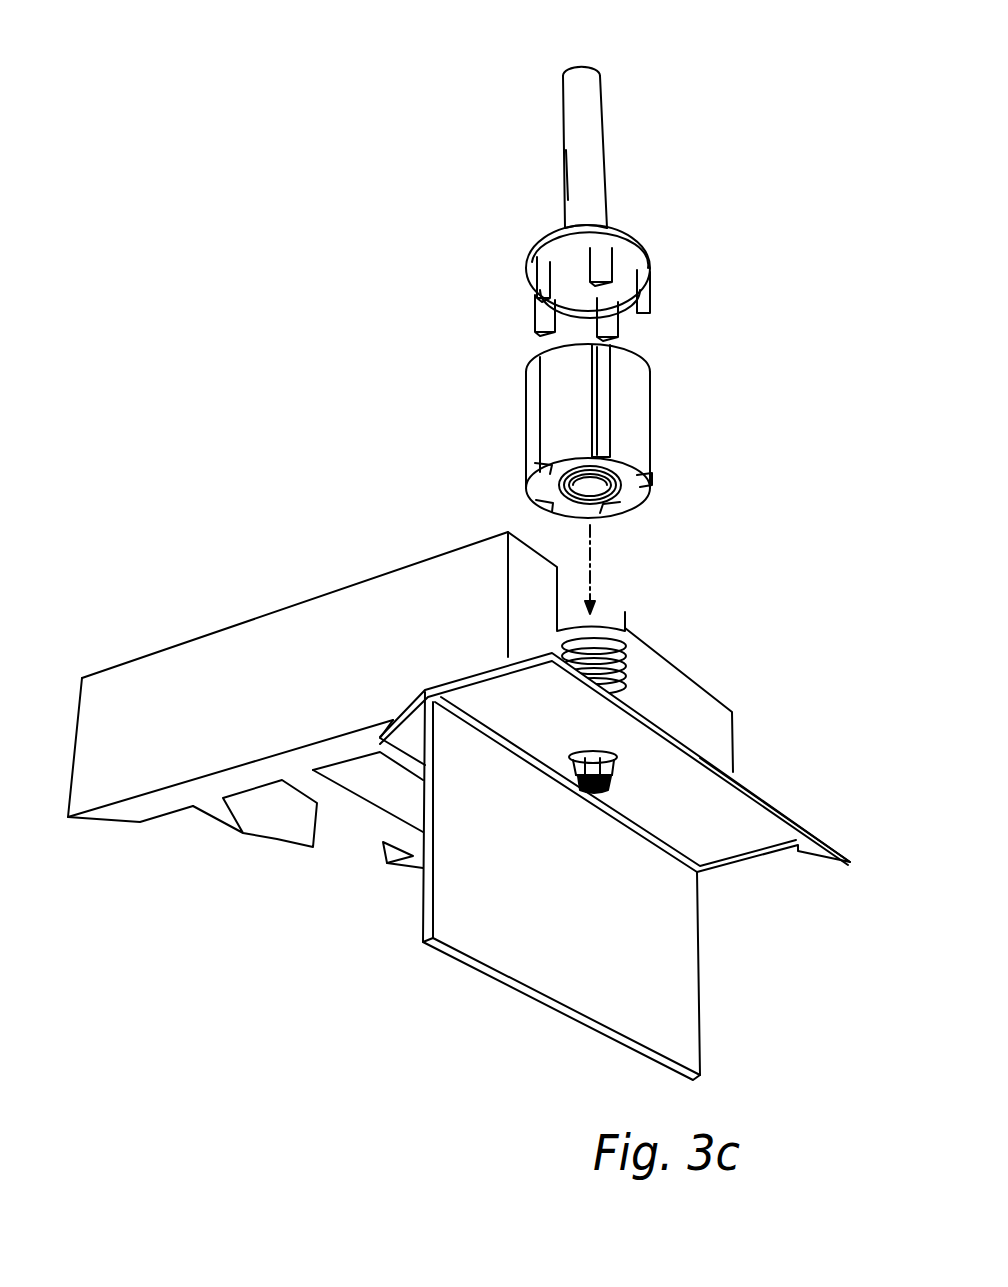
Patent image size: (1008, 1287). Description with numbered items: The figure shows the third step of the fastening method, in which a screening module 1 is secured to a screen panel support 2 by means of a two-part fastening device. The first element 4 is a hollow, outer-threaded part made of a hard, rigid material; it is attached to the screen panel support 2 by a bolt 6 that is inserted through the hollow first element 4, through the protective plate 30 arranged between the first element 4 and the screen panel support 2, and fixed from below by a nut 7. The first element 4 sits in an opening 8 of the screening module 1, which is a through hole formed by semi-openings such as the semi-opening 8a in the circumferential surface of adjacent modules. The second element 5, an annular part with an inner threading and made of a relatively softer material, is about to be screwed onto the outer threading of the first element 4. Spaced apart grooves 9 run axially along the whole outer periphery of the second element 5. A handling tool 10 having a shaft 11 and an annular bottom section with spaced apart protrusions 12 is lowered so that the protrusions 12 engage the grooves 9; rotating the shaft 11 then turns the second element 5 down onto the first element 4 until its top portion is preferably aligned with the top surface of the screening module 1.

The screening module 1 is at (703, 717).
The screen panel support 2 is at (670, 953).
The first element 4 is at (662, 657).
The second element 5 is at (636, 425).
The bolt 6 is at (593, 796).
The nut 7 is at (590, 753).
The opening 8 is at (606, 606).
The semi-opening 8a is at (618, 633).
The grooves 9 is at (600, 380).
The handling tool 10 is at (582, 95).
The shaft 11 is at (592, 143).
The protrusions 12 is at (605, 252).
The protective plate 30 is at (763, 788).